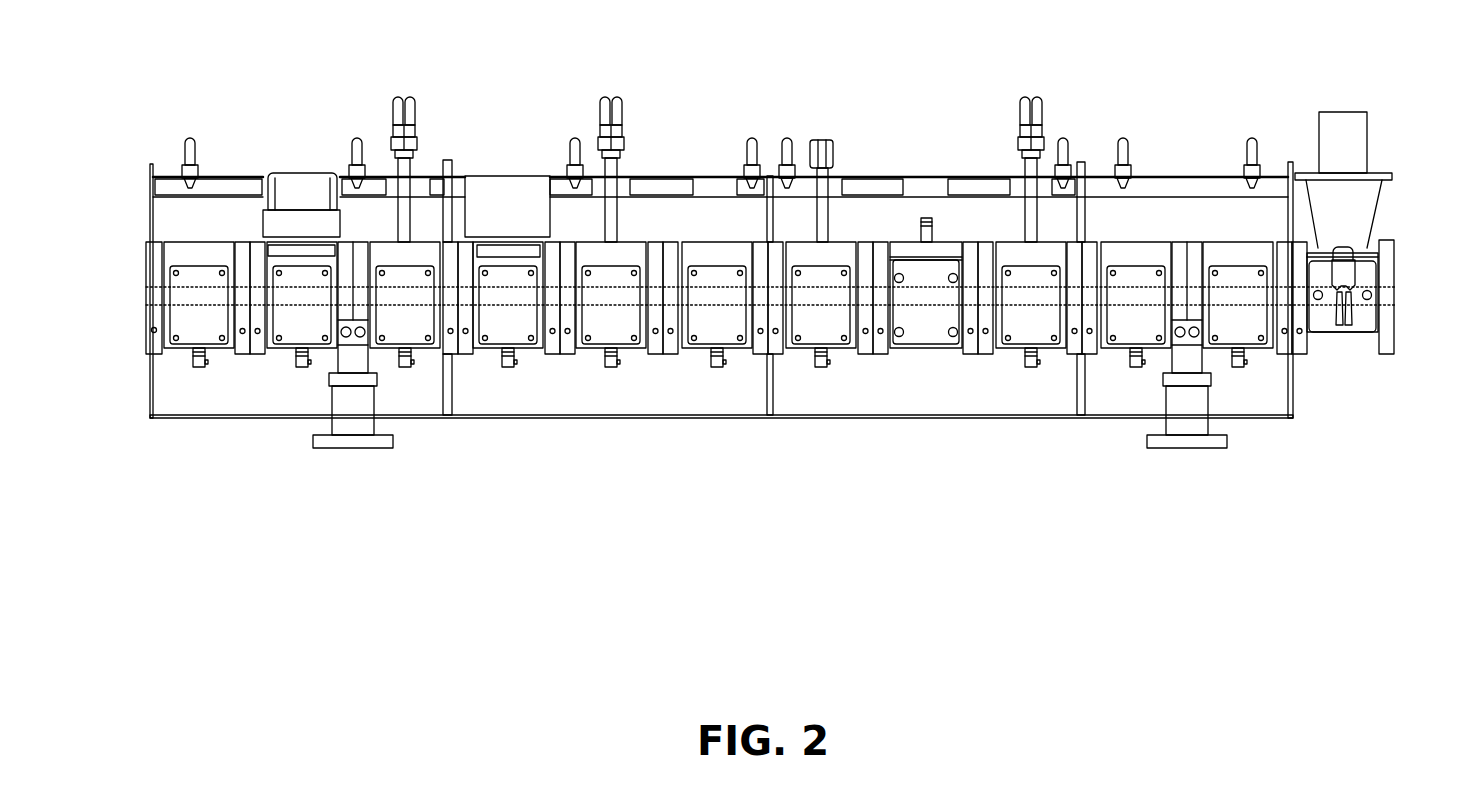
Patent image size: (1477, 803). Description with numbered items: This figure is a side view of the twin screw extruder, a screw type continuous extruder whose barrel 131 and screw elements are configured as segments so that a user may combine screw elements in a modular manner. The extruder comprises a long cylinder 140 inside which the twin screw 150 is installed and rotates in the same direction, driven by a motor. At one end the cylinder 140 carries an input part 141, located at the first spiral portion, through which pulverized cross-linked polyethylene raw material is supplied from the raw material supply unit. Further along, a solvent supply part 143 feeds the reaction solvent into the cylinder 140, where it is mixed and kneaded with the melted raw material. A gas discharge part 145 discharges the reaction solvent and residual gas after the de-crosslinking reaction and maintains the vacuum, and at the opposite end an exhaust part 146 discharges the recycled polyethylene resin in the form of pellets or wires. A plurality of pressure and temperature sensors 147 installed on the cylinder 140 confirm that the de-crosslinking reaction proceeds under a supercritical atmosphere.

The barrel 131 is at (1195, 245).
The cylinder 140 is at (707, 356).
The input part 141 is at (1362, 250).
The solvent supply part 143 is at (823, 140).
The gas discharge part 145 is at (300, 172).
The exhaust part 146 is at (145, 262).
The pressure and temperature sensors 147 is at (410, 98).
The twin screw 150 is at (160, 303).